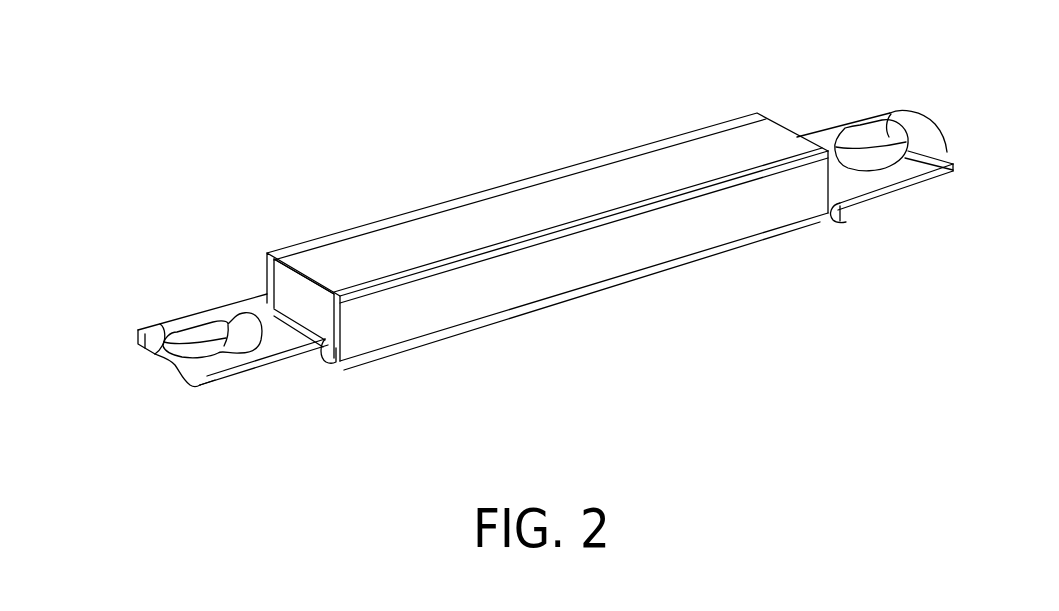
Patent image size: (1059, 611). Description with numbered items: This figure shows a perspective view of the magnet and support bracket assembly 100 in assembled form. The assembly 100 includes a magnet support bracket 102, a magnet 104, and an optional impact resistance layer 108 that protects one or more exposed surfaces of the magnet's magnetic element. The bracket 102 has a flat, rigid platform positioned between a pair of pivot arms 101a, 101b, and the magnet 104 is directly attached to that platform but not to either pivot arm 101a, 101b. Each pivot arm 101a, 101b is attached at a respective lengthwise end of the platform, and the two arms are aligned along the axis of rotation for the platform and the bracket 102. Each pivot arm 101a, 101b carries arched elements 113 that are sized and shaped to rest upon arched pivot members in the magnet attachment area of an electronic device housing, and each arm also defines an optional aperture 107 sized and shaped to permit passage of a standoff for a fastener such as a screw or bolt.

The magnet and support bracket assembly 100 is at (514, 258).
The pivot arm 101a is at (178, 327).
The pivot arm 101b is at (767, 151).
The magnet support bracket 102 is at (243, 388).
The magnet 104 is at (440, 302).
The aperture 107 is at (227, 333).
The impact resistance layer 108 is at (453, 232).
The arched element 113 is at (172, 338).